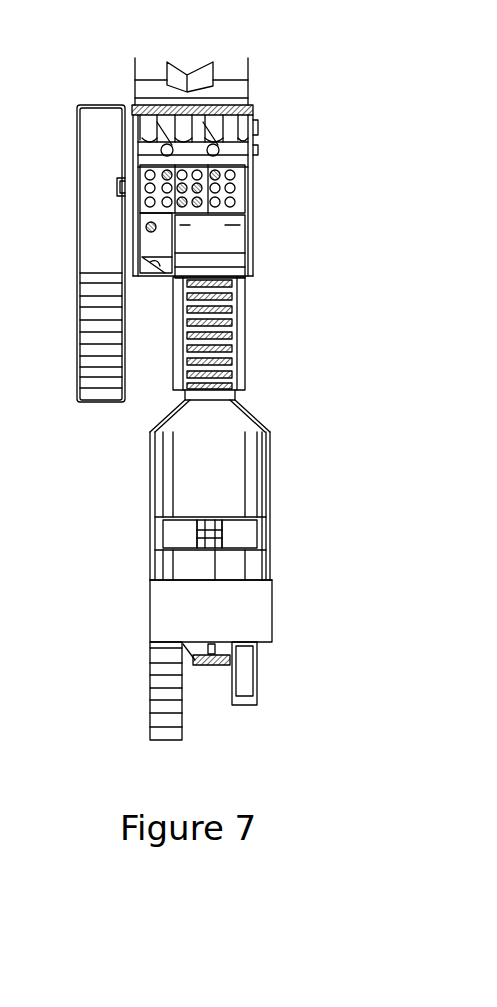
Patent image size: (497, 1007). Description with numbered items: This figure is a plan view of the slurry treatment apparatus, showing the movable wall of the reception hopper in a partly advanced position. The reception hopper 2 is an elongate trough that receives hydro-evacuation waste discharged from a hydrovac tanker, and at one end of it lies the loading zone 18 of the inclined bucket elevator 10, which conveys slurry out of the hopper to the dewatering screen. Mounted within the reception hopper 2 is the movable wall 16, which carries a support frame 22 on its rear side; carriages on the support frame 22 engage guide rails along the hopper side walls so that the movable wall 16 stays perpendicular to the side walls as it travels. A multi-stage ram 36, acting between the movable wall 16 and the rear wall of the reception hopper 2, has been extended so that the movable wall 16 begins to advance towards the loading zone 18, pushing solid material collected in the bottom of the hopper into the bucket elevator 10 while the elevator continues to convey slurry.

The reception hopper 2 is at (245, 399).
The bucket elevator 10 is at (258, 325).
The loading zone 18 is at (219, 402).
The movable wall 16 is at (245, 509).
The support frame 22 is at (233, 548).
The multi-stage ram 36 is at (217, 562).